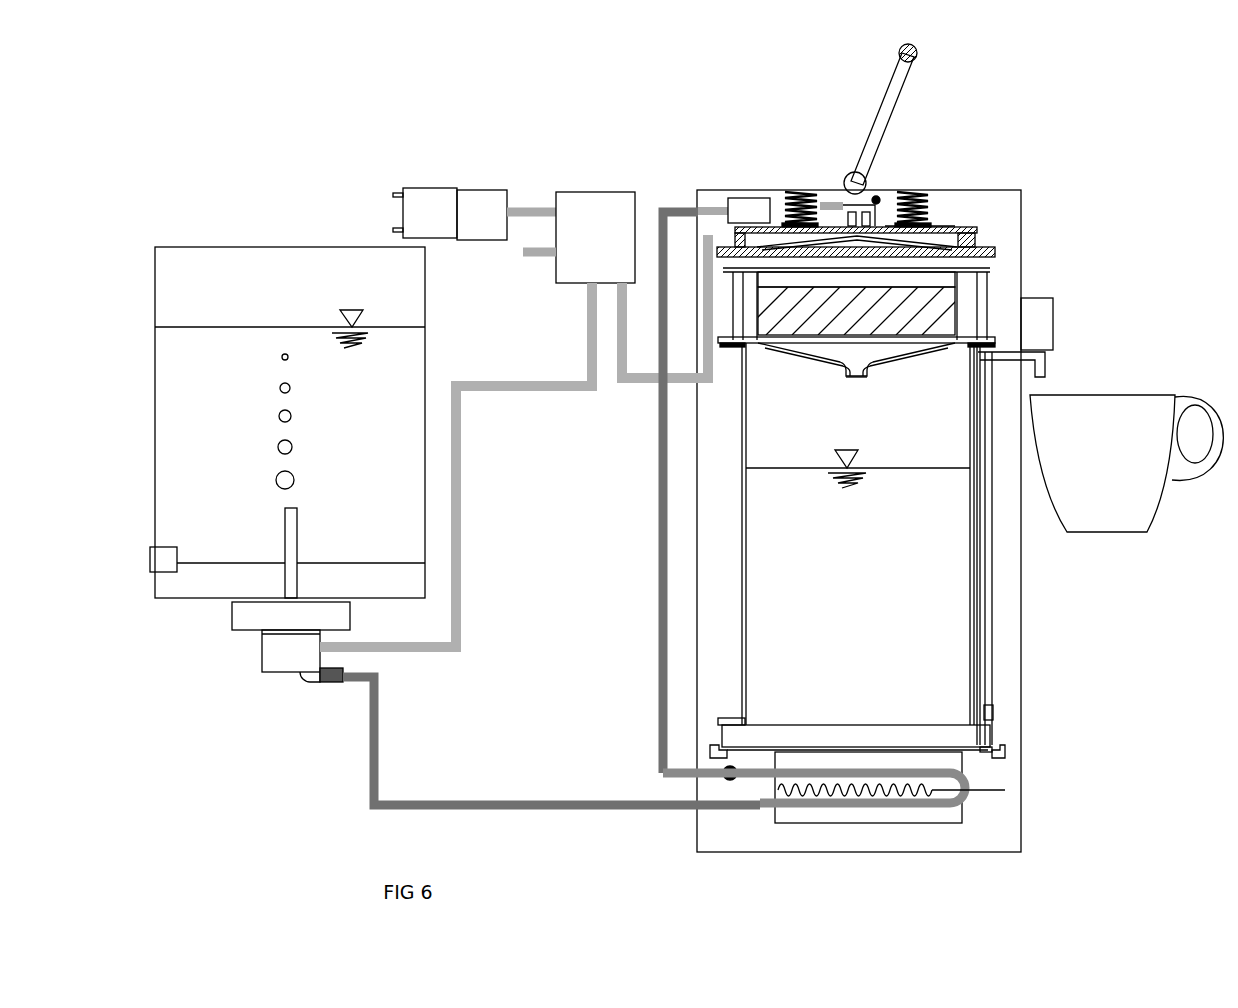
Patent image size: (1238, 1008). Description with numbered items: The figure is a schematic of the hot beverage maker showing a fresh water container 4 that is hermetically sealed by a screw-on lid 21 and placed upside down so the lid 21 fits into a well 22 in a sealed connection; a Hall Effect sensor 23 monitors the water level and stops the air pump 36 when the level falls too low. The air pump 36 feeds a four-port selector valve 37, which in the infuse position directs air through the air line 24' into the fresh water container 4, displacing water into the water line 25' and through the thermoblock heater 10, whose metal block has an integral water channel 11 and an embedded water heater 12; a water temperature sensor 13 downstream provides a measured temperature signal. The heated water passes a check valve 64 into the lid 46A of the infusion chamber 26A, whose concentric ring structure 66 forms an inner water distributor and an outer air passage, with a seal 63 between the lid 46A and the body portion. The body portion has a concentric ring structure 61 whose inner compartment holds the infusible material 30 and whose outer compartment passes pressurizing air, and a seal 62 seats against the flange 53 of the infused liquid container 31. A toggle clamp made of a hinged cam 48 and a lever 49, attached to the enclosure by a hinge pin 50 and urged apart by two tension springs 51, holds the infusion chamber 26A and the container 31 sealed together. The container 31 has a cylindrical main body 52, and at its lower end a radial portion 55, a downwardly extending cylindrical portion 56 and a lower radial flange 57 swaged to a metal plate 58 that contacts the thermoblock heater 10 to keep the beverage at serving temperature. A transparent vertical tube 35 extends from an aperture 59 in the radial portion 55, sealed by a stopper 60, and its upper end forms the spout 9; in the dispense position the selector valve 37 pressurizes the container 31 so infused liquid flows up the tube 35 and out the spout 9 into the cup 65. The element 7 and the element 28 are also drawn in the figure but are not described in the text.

The fresh water container 4 is at (283, 281).
The Hall Effect sensor 23 is at (163, 565).
The screw-on lid 21 is at (235, 614).
The well 22 is at (277, 642).
The air pump 36 is at (483, 188).
The selector valve 37 is at (612, 190).
The air line 24' is at (456, 465).
The water line 25' is at (551, 764).
The check valve 64 is at (747, 205).
The seal 63 is at (727, 247).
The tension springs 51 is at (797, 190).
The hinged cam 48 is at (872, 182).
The hinge pin 50 is at (947, 210).
The lever 49 is at (897, 90).
The lid 46A is at (973, 228).
The concentric ring structure 66 is at (935, 277).
The infusion chamber 26A is at (925, 292).
The infusible material 30 is at (918, 305).
The cylindrical main body 52 is at (965, 322).
The concentric ring structure 61 is at (985, 332).
The seal 62 is at (997, 340).
The flange 53 is at (743, 342).
The outlet 28 is at (856, 378).
The infused liquid container 31 is at (963, 553).
The tube 35 is at (990, 607).
The spout 9 is at (1047, 368).
The valve 7 is at (1043, 342).
The cup 65 is at (1116, 485).
The radial portion 55 is at (718, 720).
The cylindrical portion 56 is at (717, 735).
The radial flange 57 is at (712, 753).
The aperture 59 is at (998, 740).
The stopper 60 is at (992, 715).
The metal plate 58 is at (985, 752).
The water temperature sensor 13 is at (726, 778).
The water heater 12 is at (968, 793).
The water channel 11 is at (903, 808).
The thermoblock heater 10 is at (875, 825).